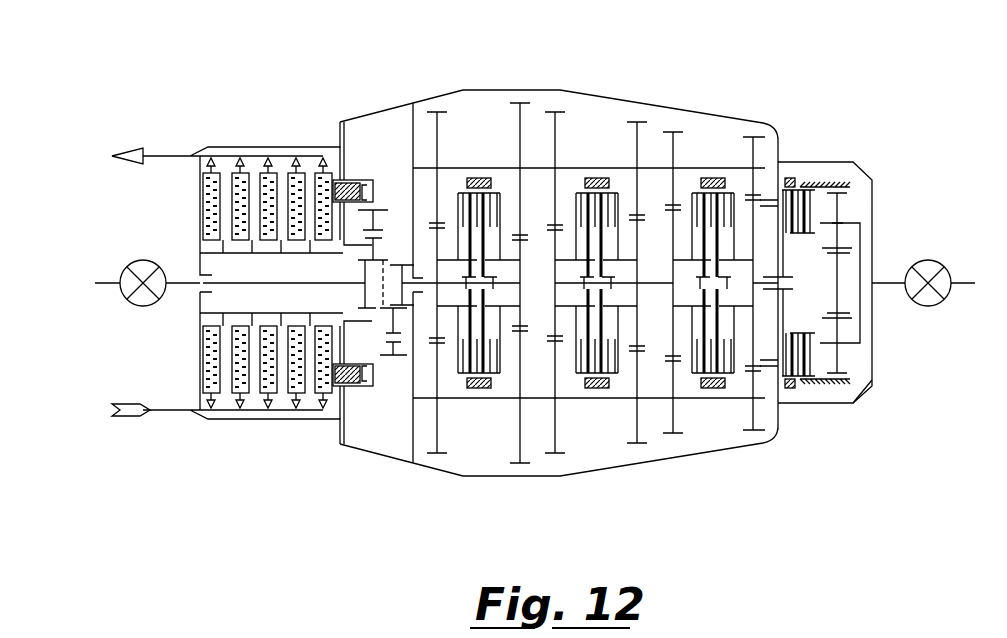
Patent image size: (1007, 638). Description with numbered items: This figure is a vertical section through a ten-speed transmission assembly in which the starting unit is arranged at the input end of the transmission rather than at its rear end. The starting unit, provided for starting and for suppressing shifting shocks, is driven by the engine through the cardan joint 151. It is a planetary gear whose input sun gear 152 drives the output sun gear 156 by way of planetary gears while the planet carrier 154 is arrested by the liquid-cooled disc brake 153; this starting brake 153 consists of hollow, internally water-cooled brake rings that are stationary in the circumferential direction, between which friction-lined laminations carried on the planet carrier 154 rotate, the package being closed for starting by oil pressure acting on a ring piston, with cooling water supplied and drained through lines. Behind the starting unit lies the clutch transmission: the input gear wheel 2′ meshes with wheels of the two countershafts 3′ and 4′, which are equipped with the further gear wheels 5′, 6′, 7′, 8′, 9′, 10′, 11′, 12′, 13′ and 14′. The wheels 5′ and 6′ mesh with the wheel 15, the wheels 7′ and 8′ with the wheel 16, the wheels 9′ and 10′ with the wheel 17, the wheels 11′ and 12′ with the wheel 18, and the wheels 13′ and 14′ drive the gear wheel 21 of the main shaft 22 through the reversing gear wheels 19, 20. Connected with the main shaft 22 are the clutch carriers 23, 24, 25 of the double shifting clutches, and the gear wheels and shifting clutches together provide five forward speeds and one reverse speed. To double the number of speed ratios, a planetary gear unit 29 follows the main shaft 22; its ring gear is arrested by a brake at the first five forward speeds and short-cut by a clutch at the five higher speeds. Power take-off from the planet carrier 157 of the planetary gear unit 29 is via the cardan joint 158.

The cardan joint 151 is at (143, 307).
The input sun gear 152 is at (358, 270).
The liquid-cooled disc brake 153 is at (270, 203).
The planet carrier 154 is at (378, 232).
The output sun gear 156 is at (362, 303).
The planet carrier 157 is at (862, 244).
The cardan joint 158 is at (930, 307).
The input gear wheel 2′ is at (440, 330).
The countershaft 3′ is at (440, 118).
The countershaft 4′ is at (440, 453).
The gear wheel 5′ is at (518, 106).
The gear wheel 6′ is at (520, 462).
The gear wheel 7′ is at (560, 114).
The gear wheel 8′ is at (556, 452).
The gear wheel 9′ is at (635, 126).
The gear wheel 10′ is at (637, 443).
The gear wheel 11′ is at (673, 135).
The gear wheel 12′ is at (673, 433).
The gear wheel 13′ is at (760, 140).
The gear wheel 14′ is at (778, 432).
The gear wheel 15 is at (520, 325).
The gear wheel 16 is at (558, 325).
The gear wheel 17 is at (615, 325).
The gear wheel 18 is at (678, 330).
The reversing gear wheel 19 is at (800, 186).
The reversing gear wheel 20 is at (815, 385).
The gear wheel 21 is at (725, 320).
The main shaft 22 is at (607, 296).
The clutch carrier 23 is at (462, 281).
The clutch carrier 24 is at (578, 281).
The clutch carrier 25 is at (700, 288).
The planetary gear unit 29 is at (840, 200).